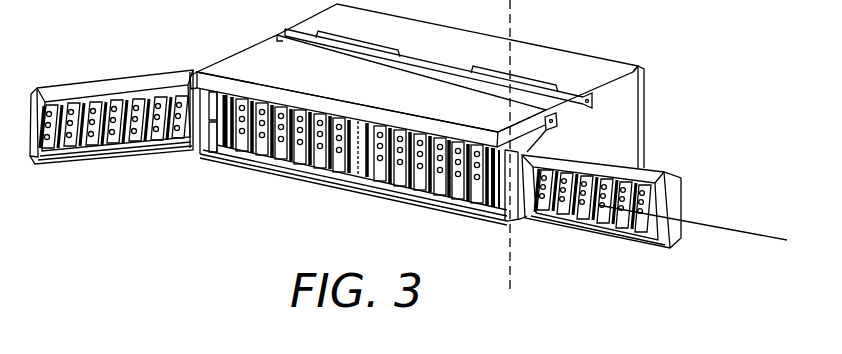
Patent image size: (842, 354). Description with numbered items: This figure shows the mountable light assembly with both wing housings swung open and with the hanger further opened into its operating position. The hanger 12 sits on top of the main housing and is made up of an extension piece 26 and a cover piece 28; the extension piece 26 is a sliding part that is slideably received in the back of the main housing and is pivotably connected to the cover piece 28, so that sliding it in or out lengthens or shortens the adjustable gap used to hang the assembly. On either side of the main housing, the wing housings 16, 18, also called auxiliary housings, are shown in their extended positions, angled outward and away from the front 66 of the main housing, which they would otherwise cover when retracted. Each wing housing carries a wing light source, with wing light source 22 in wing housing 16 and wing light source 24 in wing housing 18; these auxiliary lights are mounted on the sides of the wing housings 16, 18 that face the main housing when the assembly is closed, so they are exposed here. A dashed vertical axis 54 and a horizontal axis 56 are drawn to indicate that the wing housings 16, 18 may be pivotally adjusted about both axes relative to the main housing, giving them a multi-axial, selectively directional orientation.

The hanger 12 is at (428, 112).
The extension piece 26 is at (270, 45).
The cover piece 28 is at (587, 57).
The wing housing 16 is at (111, 120).
The wing housing 18 is at (619, 209).
The wing light source 22 is at (128, 136).
The wing light source 24 is at (620, 217).
The front of the main housing 66 is at (360, 187).
The vertical axis 54 is at (510, 257).
The horizontal axis 56 is at (737, 228).